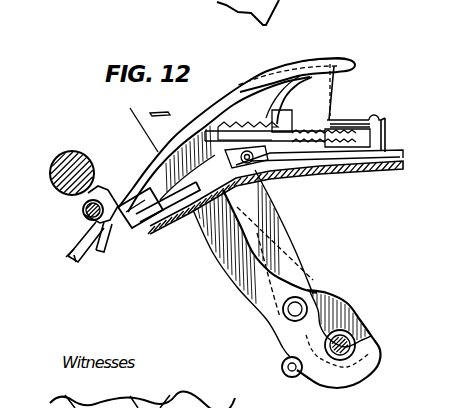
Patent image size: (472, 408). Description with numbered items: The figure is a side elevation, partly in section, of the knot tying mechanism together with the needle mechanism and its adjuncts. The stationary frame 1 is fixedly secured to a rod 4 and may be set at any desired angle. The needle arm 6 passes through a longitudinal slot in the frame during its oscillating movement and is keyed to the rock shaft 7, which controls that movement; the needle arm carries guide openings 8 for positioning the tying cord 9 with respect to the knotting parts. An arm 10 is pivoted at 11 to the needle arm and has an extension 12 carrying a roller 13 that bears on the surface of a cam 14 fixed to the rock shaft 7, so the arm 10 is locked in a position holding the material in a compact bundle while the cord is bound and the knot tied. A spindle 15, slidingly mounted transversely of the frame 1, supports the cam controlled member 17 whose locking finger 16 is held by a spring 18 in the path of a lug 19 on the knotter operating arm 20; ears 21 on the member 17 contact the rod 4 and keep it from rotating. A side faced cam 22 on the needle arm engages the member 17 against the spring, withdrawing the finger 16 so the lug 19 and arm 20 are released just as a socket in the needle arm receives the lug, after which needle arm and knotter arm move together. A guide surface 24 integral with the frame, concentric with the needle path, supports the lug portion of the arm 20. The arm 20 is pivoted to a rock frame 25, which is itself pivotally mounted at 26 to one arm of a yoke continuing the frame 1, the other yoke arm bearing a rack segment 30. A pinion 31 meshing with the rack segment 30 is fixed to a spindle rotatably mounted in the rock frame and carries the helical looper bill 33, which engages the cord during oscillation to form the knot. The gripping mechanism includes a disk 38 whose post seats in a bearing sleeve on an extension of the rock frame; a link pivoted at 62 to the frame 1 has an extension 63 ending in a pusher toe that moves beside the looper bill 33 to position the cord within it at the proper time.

The frame 1 is at (346, 171).
The rod 4 is at (70, 151).
The needle arm 6 is at (137, 133).
The rock shaft 7 is at (344, 330).
The guide openings 8 is at (187, 113).
The tying cord 9 is at (334, 88).
The arm 10 is at (270, 223).
The pivot 11 is at (301, 298).
The extension 12 is at (285, 338).
The roller 13 is at (302, 389).
The cam 14 is at (373, 338).
The spindle 15 is at (71, 256).
The locking finger 16 is at (150, 174).
The cam controlled member 17 is at (86, 220).
The spring 18 is at (76, 262).
The lug 19 is at (108, 235).
The knotter operating arm 20 is at (190, 214).
The ears 21 is at (121, 188).
The side faced cam 22 is at (128, 230).
The guide surface 24 is at (129, 123).
The rock frame 25 is at (330, 150).
The pivot 26 is at (277, 112).
The rack segment 30 is at (243, 120).
The pinion 31 is at (246, 178).
The looper bill 33 is at (312, 146).
The disk 38 is at (355, 147).
The pivot 62 is at (382, 117).
The extension 63 is at (350, 119).